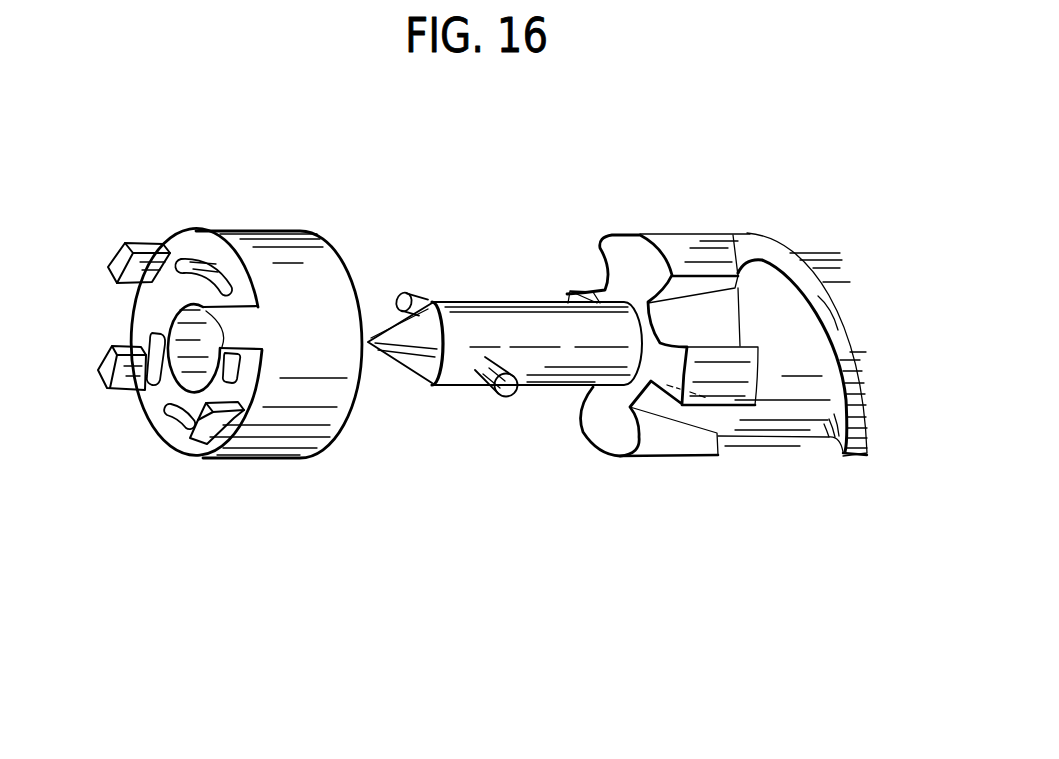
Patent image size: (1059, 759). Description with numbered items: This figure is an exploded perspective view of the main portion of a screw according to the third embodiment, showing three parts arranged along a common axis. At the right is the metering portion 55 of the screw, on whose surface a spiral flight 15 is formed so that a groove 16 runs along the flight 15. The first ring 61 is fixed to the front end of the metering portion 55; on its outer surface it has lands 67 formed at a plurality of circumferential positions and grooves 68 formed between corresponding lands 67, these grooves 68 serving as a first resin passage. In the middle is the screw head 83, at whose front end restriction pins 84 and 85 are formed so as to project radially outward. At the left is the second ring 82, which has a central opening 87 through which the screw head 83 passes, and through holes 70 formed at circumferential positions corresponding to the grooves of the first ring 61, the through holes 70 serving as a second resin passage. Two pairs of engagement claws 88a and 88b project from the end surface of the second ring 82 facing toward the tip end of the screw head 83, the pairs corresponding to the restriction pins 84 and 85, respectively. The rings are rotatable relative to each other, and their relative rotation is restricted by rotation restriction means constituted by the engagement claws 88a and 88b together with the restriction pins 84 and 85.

The second ring 82 is at (217, 324).
The screw head 83 is at (505, 302).
The restriction pin 84 is at (409, 291).
The restriction pin 85 is at (491, 394).
The central opening 87 is at (168, 317).
The through holes 70 is at (205, 262).
The engagement claws 88a is at (104, 373).
The engagement claws 88b is at (117, 243).
The first ring 61 is at (708, 317).
The lands 67 is at (733, 375).
The grooves 68 is at (690, 417).
The metering portion 55 is at (832, 300).
The flight 15 is at (840, 357).
The groove 16 is at (838, 302).